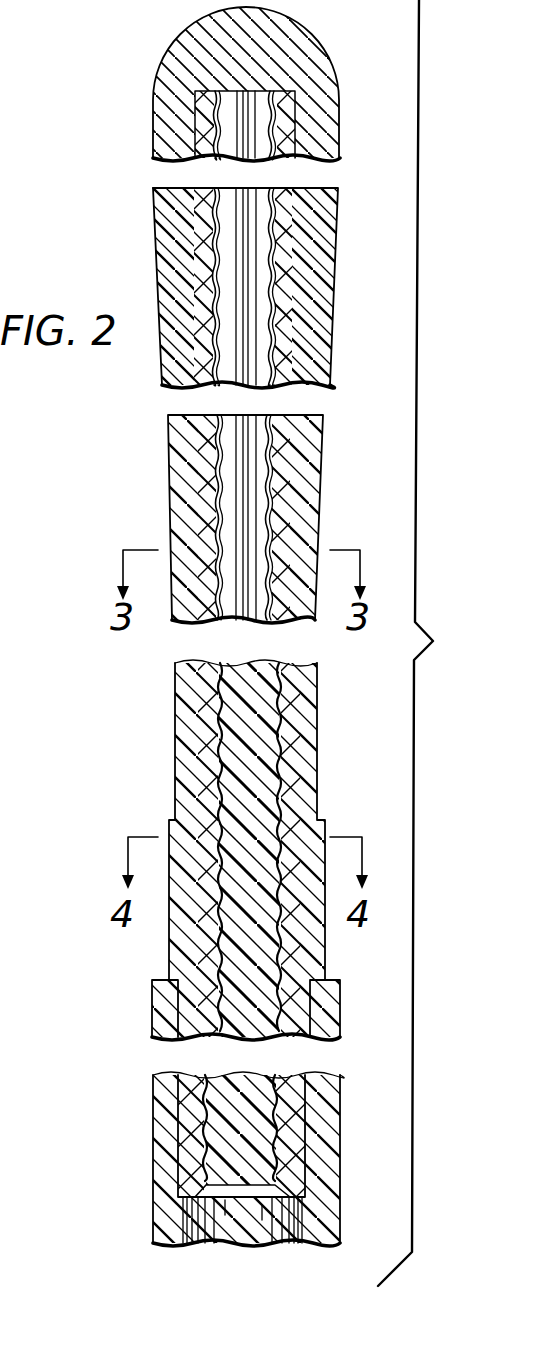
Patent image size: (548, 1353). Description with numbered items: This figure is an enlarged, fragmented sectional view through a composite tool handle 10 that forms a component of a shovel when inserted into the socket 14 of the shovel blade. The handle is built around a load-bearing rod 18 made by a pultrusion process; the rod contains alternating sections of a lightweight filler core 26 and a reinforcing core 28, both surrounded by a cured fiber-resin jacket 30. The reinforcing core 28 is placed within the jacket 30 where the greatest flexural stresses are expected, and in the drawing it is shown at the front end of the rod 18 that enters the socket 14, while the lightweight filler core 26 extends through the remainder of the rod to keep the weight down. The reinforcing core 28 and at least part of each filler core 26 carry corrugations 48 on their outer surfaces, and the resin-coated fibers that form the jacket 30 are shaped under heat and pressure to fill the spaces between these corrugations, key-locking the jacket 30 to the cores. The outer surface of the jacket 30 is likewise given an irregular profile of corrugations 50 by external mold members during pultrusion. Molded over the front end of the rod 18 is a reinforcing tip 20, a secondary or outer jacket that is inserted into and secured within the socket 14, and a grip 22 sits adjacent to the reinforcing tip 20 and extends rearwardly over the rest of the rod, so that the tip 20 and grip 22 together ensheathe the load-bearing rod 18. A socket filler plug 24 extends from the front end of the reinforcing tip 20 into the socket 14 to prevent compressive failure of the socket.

The tool handle 10 is at (424, 643).
The socket 14 is at (162, 1132).
The load-bearing rod 18 is at (239, 850).
The reinforcing tip 20 is at (325, 963).
The grip 22 is at (165, 258).
The socket filler plug 24 is at (245, 1225).
The lightweight filler core 26 is at (262, 326).
The reinforcing core 28 is at (250, 690).
The fiber-resin jacket 30 is at (283, 241).
The corrugations 48 is at (275, 1098).
The corrugations 50 is at (295, 1147).